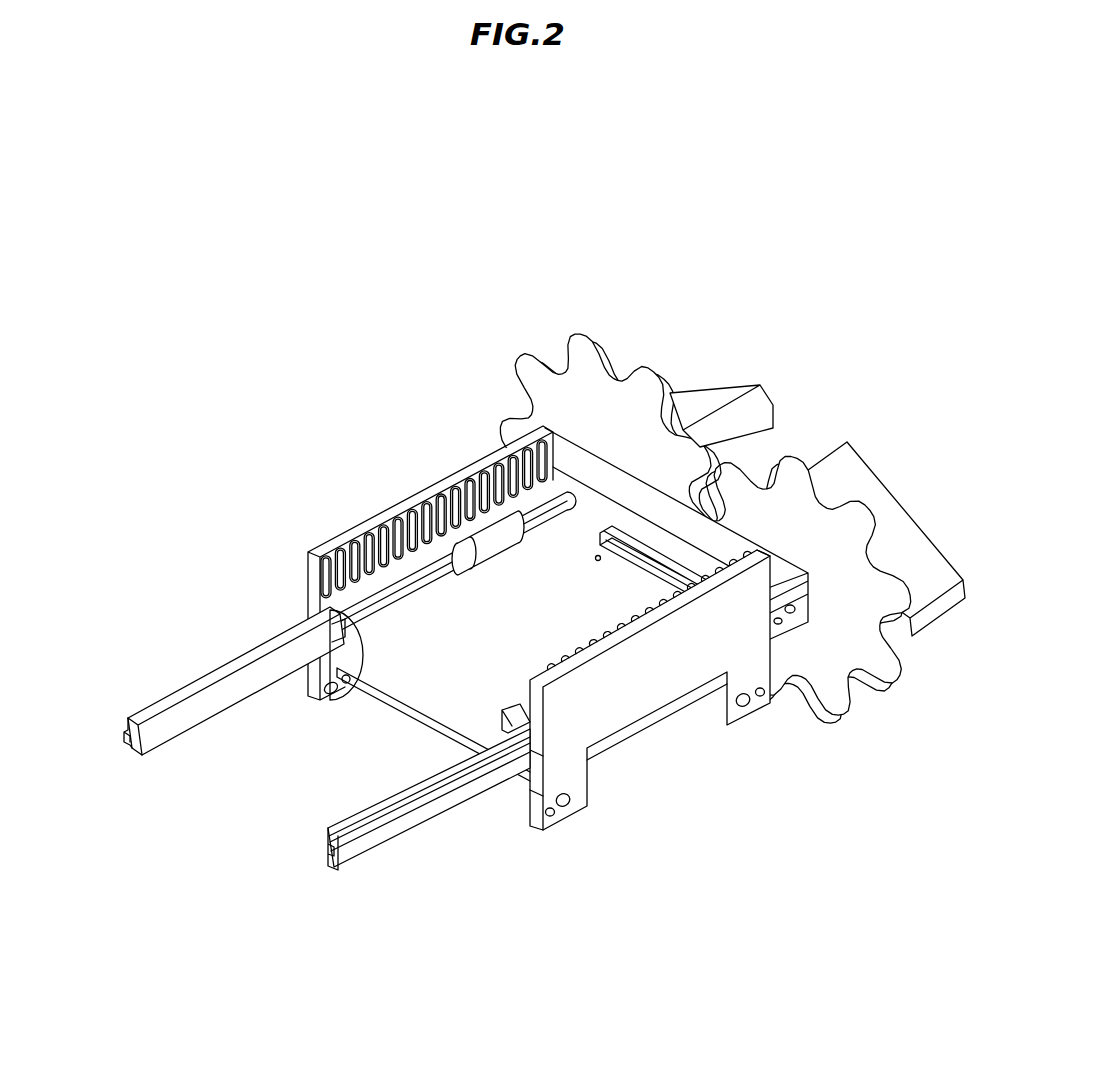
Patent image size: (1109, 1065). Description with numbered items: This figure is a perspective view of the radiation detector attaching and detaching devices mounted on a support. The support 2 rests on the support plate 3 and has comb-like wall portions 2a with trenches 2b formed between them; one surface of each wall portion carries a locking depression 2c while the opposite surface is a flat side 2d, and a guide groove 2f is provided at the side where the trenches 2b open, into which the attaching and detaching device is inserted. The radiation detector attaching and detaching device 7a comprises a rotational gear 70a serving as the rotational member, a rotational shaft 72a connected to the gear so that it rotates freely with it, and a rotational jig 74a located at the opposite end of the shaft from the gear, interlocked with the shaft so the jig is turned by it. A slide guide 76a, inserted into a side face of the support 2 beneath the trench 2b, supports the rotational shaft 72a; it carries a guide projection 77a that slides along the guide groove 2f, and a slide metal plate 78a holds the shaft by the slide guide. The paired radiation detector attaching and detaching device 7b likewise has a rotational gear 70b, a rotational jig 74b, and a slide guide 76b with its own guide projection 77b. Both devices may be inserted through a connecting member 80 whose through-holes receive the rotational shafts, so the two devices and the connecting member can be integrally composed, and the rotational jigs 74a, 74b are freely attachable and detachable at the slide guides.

The radiation detector attaching and detaching device 7a is at (610, 332).
The radiation detector attaching and detaching device 7b is at (871, 437).
The rotational gear 70a is at (580, 336).
The rotational gear 70b is at (805, 462).
The connecting member 80 is at (652, 500).
The support 2 is at (312, 592).
The wall portion 2a is at (348, 533).
The trench 2b is at (442, 490).
The depression 2c is at (397, 513).
The flat side 2d is at (480, 467).
The guide groove 2f is at (532, 748).
The support plate 3 is at (387, 697).
The rotational shaft 72a is at (407, 590).
The rotational jig 74a is at (345, 632).
The rotational jig 74b is at (507, 726).
The slide guide 76a is at (187, 727).
The slide guide 76b is at (357, 857).
The guide projection 77a is at (126, 723).
The guide projection 77b is at (414, 811).
The slide metal plate 78a is at (487, 552).